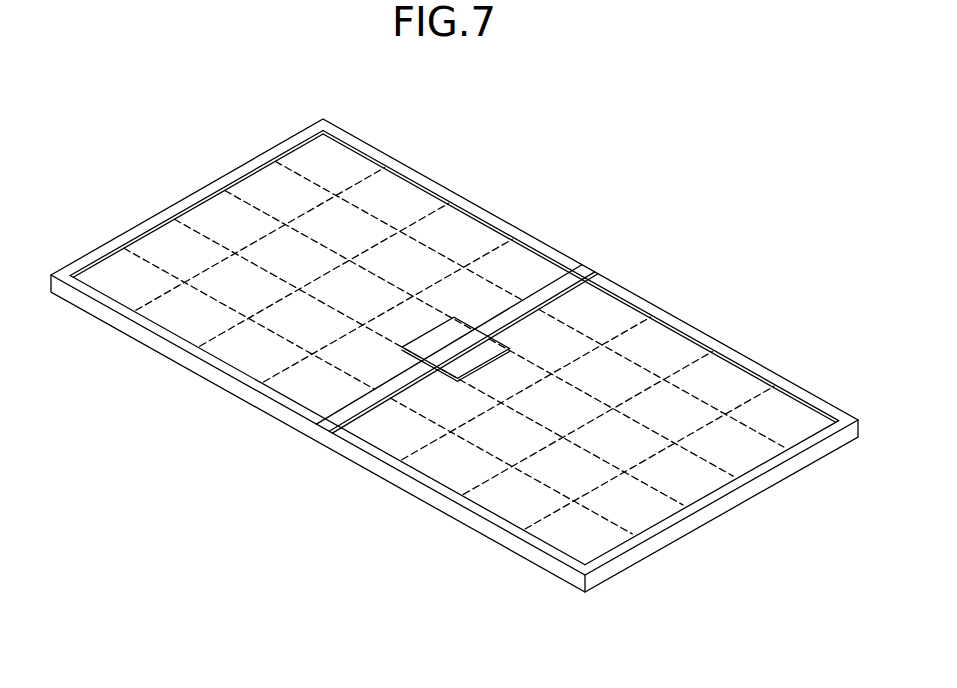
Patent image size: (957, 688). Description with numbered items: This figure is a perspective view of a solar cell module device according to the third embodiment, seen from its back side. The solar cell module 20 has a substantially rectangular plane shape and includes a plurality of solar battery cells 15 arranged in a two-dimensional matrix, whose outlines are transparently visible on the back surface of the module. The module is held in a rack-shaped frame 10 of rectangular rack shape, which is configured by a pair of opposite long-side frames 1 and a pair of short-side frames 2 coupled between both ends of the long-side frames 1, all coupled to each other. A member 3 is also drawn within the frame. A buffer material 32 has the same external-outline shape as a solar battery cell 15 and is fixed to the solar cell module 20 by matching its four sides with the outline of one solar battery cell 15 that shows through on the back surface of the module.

The long-side frame 1 is at (466, 199).
The short-side frame 2 is at (197, 191).
The intermediate frame member 3 is at (560, 282).
The rack-shaped frame 10 is at (390, 156).
The solar battery cell 15 is at (692, 413).
The solar cell module 20 is at (600, 538).
The buffer material 32 is at (497, 356).